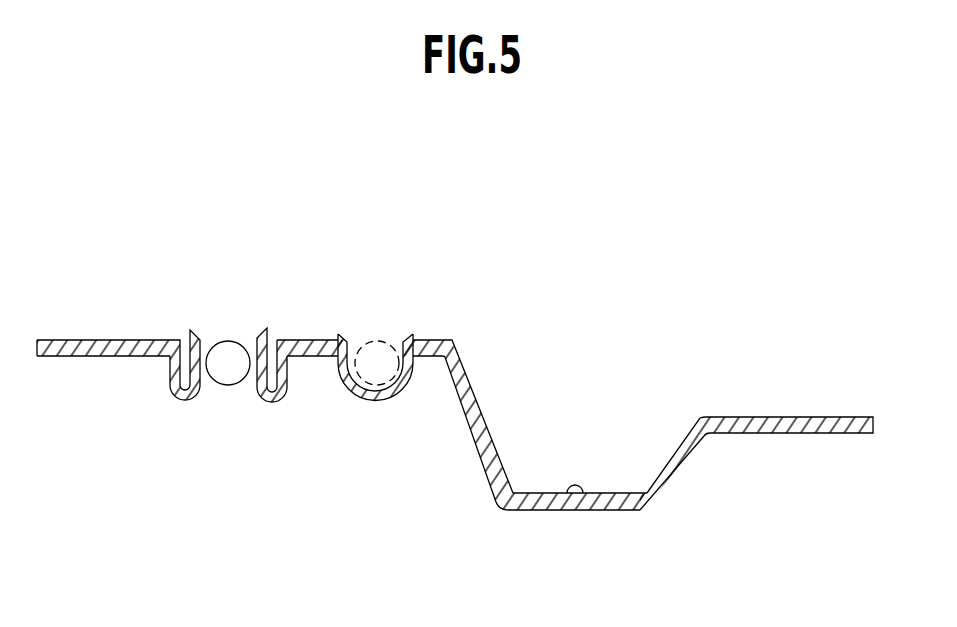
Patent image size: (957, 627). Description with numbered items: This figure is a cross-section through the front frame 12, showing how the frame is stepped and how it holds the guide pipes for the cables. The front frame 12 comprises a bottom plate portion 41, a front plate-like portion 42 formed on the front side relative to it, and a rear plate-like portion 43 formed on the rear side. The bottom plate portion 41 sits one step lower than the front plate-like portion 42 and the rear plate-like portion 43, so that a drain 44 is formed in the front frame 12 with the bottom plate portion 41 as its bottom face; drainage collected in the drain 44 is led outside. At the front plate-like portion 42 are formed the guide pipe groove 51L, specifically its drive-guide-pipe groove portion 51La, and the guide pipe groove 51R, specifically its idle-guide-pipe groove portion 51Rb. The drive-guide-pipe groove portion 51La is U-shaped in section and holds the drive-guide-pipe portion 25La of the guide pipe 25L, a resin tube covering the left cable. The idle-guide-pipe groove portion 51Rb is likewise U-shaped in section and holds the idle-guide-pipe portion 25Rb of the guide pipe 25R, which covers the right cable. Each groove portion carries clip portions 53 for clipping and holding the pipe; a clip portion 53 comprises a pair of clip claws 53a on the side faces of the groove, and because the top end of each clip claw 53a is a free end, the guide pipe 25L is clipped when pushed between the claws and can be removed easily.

The front frame 12 is at (674, 333).
The front plate-like portion 42 is at (88, 340).
The rear plate-like portion 43 is at (820, 417).
The bottom plate portion 41 is at (607, 510).
The drain 44 is at (572, 495).
The clip portion 53 is at (194, 368).
The clip claw 53a is at (263, 328).
The guide pipe groove 51L is at (163, 425).
The drive-guide-pipe groove portion 51La is at (190, 401).
The guide pipe groove 51R is at (435, 323).
The idle-guide-pipe groove portion 51Rb is at (397, 338).
The guide pipe 25L is at (288, 442).
The drive-guide-pipe portion 25La is at (217, 386).
The guide pipe 25R is at (405, 418).
The idle-guide-pipe portion 25Rb is at (358, 388).